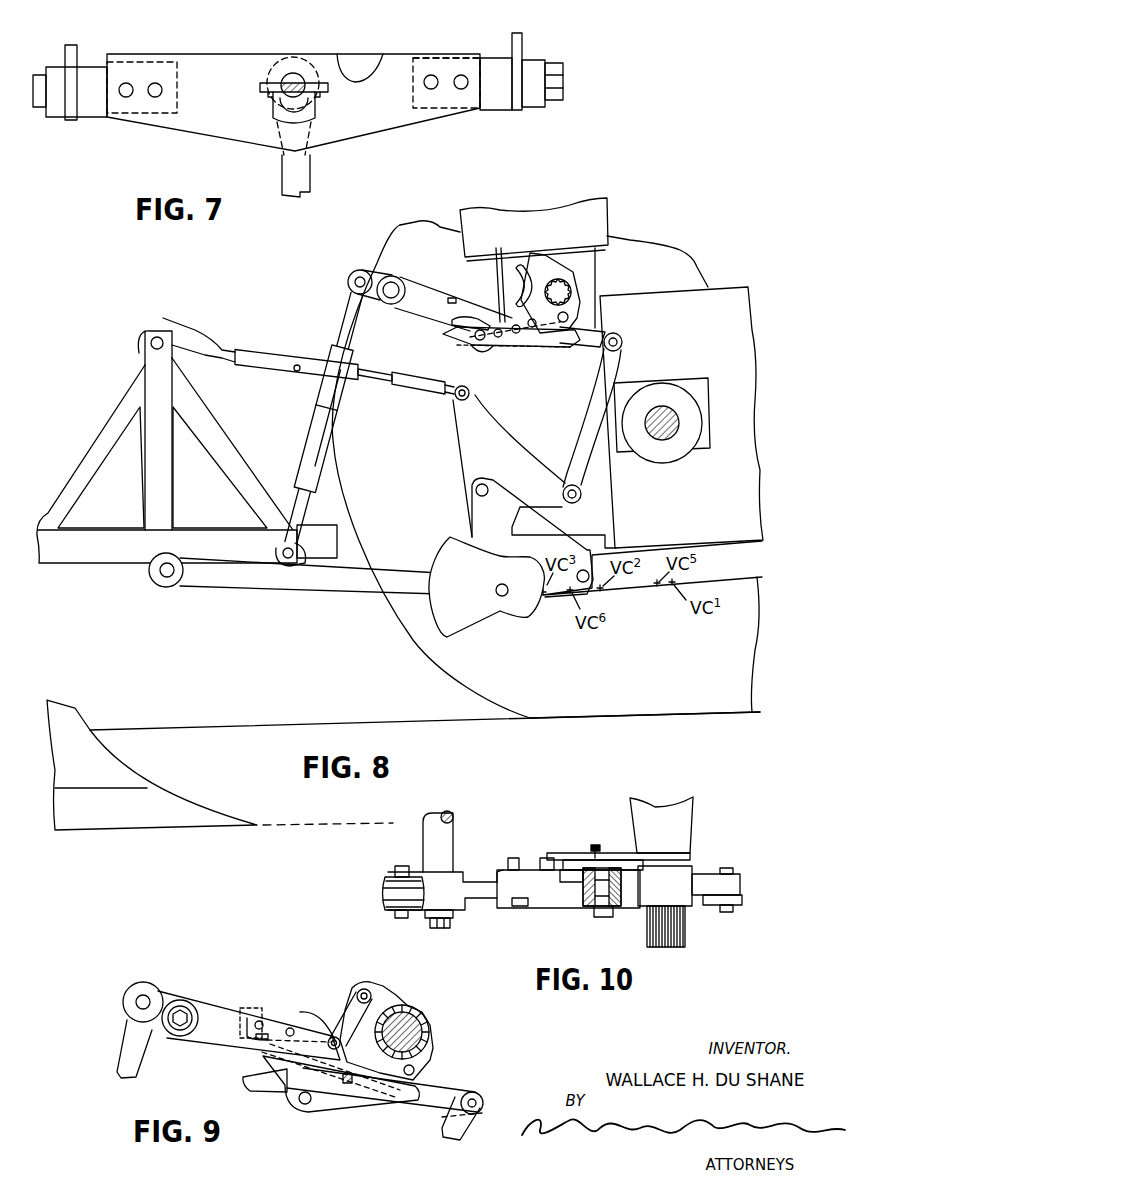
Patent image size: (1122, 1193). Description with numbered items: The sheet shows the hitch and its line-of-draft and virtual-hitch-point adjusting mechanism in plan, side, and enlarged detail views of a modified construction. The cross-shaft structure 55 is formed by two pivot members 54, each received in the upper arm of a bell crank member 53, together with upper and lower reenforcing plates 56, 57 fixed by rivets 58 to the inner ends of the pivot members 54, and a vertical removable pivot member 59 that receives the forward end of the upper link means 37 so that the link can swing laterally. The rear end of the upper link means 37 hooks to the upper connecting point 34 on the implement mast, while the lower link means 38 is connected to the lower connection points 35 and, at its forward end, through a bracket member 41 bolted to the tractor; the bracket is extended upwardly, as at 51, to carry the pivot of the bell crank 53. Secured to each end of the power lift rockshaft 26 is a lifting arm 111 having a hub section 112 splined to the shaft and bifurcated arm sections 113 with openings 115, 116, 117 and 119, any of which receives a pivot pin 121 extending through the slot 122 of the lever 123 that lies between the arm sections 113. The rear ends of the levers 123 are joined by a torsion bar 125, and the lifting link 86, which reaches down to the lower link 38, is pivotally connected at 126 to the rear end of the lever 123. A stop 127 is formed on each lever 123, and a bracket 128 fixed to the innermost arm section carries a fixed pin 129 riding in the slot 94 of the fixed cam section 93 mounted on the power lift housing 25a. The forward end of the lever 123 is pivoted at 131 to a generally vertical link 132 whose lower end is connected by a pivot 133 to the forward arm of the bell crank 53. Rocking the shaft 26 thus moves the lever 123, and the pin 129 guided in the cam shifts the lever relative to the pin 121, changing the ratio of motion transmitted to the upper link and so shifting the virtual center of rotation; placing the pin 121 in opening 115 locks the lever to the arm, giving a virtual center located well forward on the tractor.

In FIG. 10, the power lift housing 25a is at (690, 814).
In FIG. 8, the power lift rockshaft 26 is at (572, 292).
In FIG. 9, the power lift rockshaft 26 is at (428, 1032).
In FIG. 10, the power lift rockshaft 26 is at (682, 945).
In FIG. 8, the upper connecting point 34 is at (156, 337).
In FIG. 8, the lower connection points 35 is at (165, 578).
In FIG. 7, the upper link means 37 is at (312, 170).
In FIG. 8, the upper link means 37 is at (259, 348).
In FIG. 8, the lower link means 38 is at (318, 585).
In FIG. 8, the bracket member 41 is at (467, 628).
In FIG. 8, the upward extension of bracket 51 is at (480, 512).
In FIG. 7, the bell crank member 53 is at (82, 53).
In FIG. 8, the bell crank member 53 is at (456, 450).
In FIG. 7, the pivot member 54 is at (564, 78).
In FIG. 7, the cross-shaft structure 55 is at (196, 138).
In FIG. 7, the upper reenforcing plate 56 is at (398, 62).
In FIG. 7, the lower reenforcing plate 57 is at (360, 58).
In FIG. 7, the rivets 58 is at (433, 75).
In FIG. 7, the vertical removable pivot member 59 is at (293, 75).
In FIG. 8, the lifting link 86 is at (310, 434).
In FIG. 8, the cam section 93 is at (546, 258).
In FIG. 9, the cam section 93 is at (389, 990).
In FIG. 10, the cam section 93 is at (618, 853).
In FIG. 8, the first cam slot 94 is at (520, 268).
In FIG. 9, the first cam slot 94 is at (360, 991).
In FIG. 8, the lifting arm 111 is at (456, 346).
In FIG. 9, the lifting arm 111 is at (273, 1101).
In FIG. 10, the lifting arm 111 is at (545, 913).
In FIG. 8, the hub section 112 is at (576, 272).
In FIG. 9, the hub section 112 is at (412, 1016).
In FIG. 10, the hub section 112 is at (690, 874).
In FIG. 8, the arm section 113 is at (499, 340).
In FIG. 9, the arm section 113 is at (250, 1082).
In FIG. 10, the arm section 113 is at (497, 880).
In FIG. 8, the opening 115 is at (569, 317).
In FIG. 8, the opening 116 is at (534, 328).
In FIG. 8, the opening 117 is at (481, 350).
In FIG. 8, the opening 119 is at (480, 318).
In FIG. 8, the pivot pin 121 is at (516, 336).
In FIG. 9, the pivot pin 121 is at (345, 1087).
In FIG. 10, the pivot pin 121 is at (603, 915).
In FIG. 9, the slot 122 is at (400, 1098).
In FIG. 8, the lever 123 is at (414, 312).
In FIG. 9, the lever 123 is at (217, 1048).
In FIG. 10, the lever 123 is at (478, 900).
In FIG. 8, the torsion bar 125 is at (394, 280).
In FIG. 10, the torsion bar 125 is at (446, 831).
In FIG. 8, the pivot connection 126 is at (349, 278).
In FIG. 9, the pivot connection 126 is at (136, 1002).
In FIG. 10, the pivot connection 126 is at (395, 915).
In FIG. 8, the stop 127 is at (451, 297).
In FIG. 9, the stop 127 is at (243, 1020).
In FIG. 10, the stop 127 is at (521, 900).
In FIG. 8, the bracket 128 is at (497, 270).
In FIG. 9, the bracket 128 is at (305, 1014).
In FIG. 10, the bracket 128 is at (575, 862).
In FIG. 9, the fixed pin 129 is at (333, 1038).
In FIG. 10, the fixed pin 129 is at (594, 845).
In FIG. 8, the pivot connection 131 is at (621, 342).
In FIG. 9, the pivot connection 131 is at (472, 1098).
In FIG. 10, the pivot connection 131 is at (730, 870).
In FIG. 8, the vertical link 132 is at (600, 373).
In FIG. 9, the vertical link 132 is at (468, 1130).
In FIG. 10, the vertical link 132 is at (742, 900).
In FIG. 8, the pivot 133 is at (564, 516).